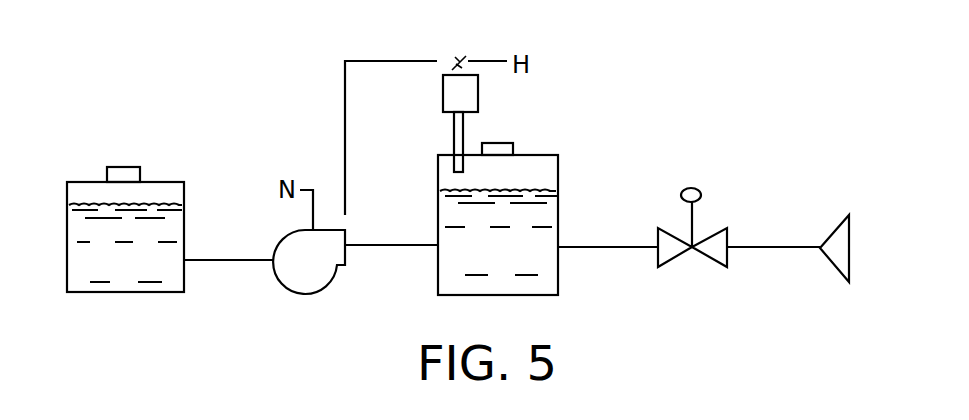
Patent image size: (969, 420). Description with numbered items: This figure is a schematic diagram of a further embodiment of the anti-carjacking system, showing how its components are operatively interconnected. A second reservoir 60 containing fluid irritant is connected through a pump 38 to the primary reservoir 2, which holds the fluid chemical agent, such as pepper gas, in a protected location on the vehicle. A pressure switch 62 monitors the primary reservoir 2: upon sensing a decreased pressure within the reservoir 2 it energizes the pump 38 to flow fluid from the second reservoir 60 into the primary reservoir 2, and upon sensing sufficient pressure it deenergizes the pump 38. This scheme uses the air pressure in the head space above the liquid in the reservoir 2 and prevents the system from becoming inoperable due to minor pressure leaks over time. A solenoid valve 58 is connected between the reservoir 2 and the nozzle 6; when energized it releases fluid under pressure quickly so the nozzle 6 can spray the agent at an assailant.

The second reservoir 60 is at (152, 182).
The pump 38 is at (335, 272).
The pressure switch 62 is at (443, 88).
The reservoir 2 is at (532, 155).
The solenoid valve 58 is at (728, 260).
The nozzle 6 is at (840, 222).